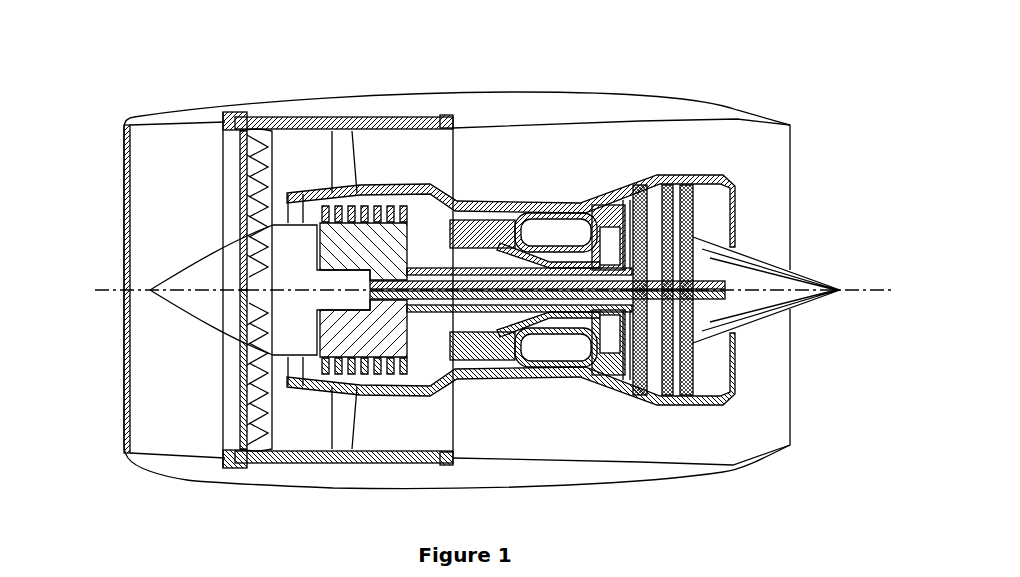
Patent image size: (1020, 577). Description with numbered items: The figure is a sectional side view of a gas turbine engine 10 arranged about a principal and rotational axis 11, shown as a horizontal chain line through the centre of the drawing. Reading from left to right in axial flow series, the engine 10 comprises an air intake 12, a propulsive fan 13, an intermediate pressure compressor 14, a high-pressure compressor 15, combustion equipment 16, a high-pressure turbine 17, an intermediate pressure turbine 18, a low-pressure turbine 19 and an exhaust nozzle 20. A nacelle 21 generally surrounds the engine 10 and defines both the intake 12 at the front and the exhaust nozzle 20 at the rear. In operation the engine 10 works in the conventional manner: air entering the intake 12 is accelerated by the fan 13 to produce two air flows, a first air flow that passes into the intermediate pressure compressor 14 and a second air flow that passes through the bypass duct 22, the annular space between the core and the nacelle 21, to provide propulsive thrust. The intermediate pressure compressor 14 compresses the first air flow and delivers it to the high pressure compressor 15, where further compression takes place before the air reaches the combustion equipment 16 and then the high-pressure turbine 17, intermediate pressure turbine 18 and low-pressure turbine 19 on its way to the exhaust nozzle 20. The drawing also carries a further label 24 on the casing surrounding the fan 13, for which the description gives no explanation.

The gas turbine engine 10 is at (118, 153).
The principal and rotational axis 11 is at (112, 283).
The air intake 12 is at (201, 124).
The propulsive fan 13 is at (243, 410).
The intermediate pressure compressor 14 is at (378, 395).
The high-pressure compressor 15 is at (472, 222).
The combustion equipment 16 is at (522, 375).
The high-pressure turbine 17 is at (583, 373).
The intermediate pressure turbine 18 is at (622, 187).
The low-pressure turbine 19 is at (630, 395).
The exhaust nozzle 20 is at (792, 423).
The nacelle 21 is at (517, 113).
The bypass duct 22 is at (422, 170).
The fan casing 24 is at (302, 118).